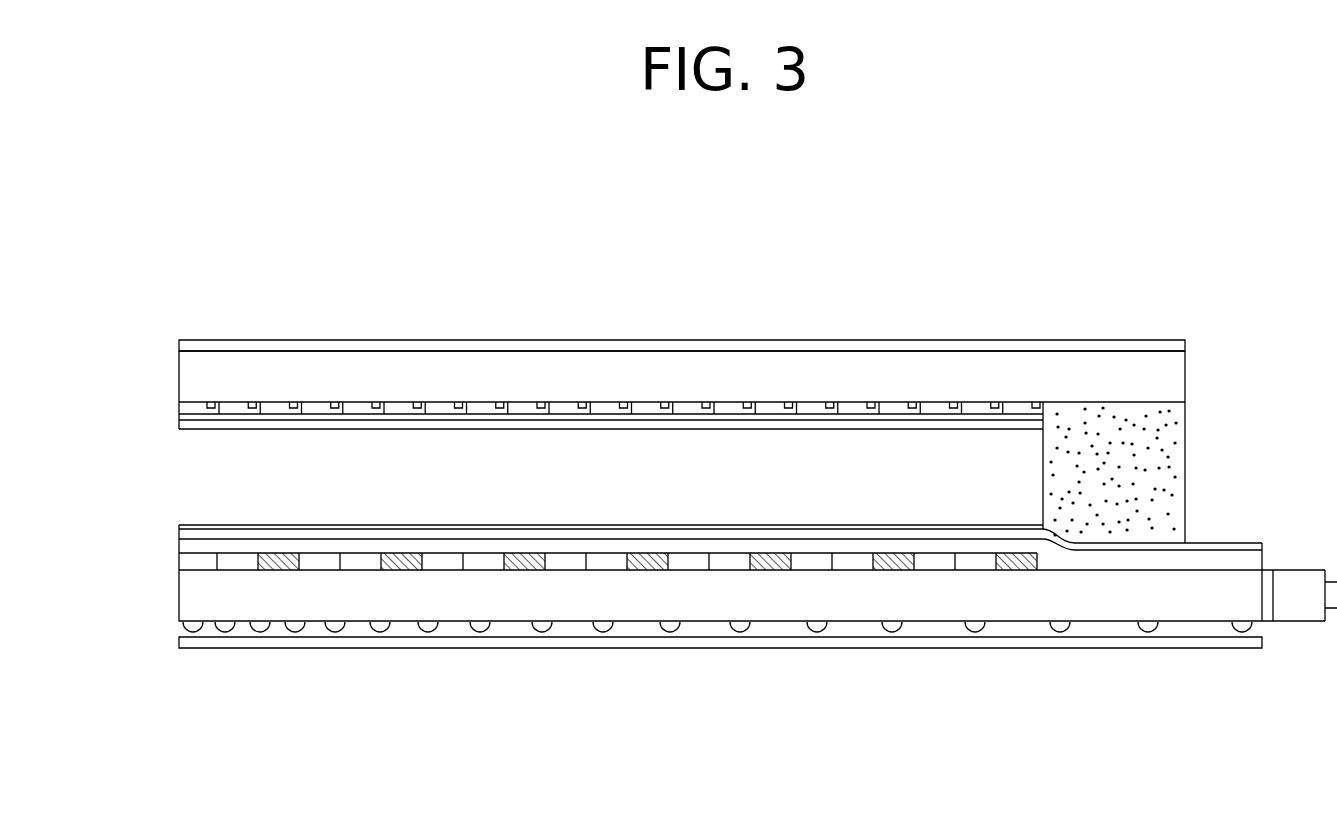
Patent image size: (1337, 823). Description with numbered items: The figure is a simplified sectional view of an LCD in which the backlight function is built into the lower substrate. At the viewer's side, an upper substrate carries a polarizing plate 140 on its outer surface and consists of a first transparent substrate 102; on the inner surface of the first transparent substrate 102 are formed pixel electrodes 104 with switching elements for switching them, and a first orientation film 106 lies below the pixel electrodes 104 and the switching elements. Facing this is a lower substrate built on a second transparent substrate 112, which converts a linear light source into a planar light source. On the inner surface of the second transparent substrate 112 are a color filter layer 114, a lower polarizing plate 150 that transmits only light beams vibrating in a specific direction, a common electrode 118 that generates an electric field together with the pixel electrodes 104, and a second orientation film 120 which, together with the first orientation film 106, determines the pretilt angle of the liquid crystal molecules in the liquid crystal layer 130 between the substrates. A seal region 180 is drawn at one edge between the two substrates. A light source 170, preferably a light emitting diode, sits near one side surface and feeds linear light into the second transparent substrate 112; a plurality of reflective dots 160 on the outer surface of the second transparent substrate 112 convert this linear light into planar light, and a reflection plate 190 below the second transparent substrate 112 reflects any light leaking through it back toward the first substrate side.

The polarizing plate 140 is at (198, 347).
The first transparent substrate 102 is at (185, 365).
The pixel electrodes 104 is at (185, 409).
The first orientation film 106 is at (180, 431).
The liquid crystal layer 130 is at (207, 485).
The sealant 180 is at (1165, 450).
The lower polarizing plate 150 is at (183, 553).
The second orientation film 120 is at (385, 532).
The common electrode 118 is at (472, 540).
The color filter layer 114 is at (185, 565).
The second transparent substrate 112 is at (186, 610).
The light source 170 is at (1300, 602).
The reflective dots 160 is at (297, 628).
The reflection plate 190 is at (210, 643).